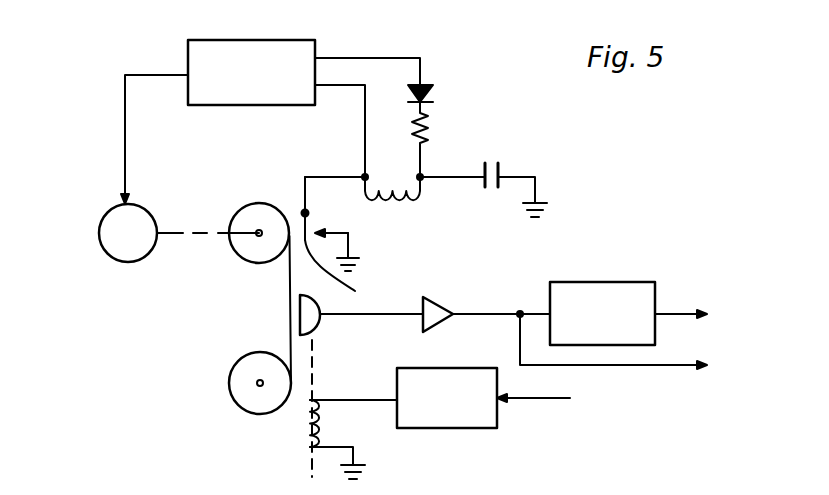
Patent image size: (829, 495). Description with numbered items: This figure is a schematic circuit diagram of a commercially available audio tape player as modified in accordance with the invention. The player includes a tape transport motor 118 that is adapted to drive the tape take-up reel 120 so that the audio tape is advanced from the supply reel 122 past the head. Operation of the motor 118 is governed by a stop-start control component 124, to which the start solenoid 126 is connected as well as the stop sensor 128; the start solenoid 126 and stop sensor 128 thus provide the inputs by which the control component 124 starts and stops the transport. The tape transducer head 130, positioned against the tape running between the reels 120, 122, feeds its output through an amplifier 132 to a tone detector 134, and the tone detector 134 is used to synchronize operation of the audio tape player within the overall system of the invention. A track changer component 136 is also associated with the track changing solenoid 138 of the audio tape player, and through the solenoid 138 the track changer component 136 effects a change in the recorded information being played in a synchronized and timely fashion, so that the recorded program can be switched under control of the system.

The tape transport motor 118 is at (99, 238).
The tape take-up reel 120 is at (245, 213).
The supply reel 122 is at (237, 398).
The stop-start control component 124 is at (286, 96).
The start solenoid 126 is at (400, 205).
The stop sensor 128 is at (350, 238).
The tape transducer head 130 is at (318, 327).
The amplifier 132 is at (438, 303).
The tone detector 134 is at (623, 283).
The track changer component 136 is at (473, 422).
The track changing solenoid 138 is at (302, 433).